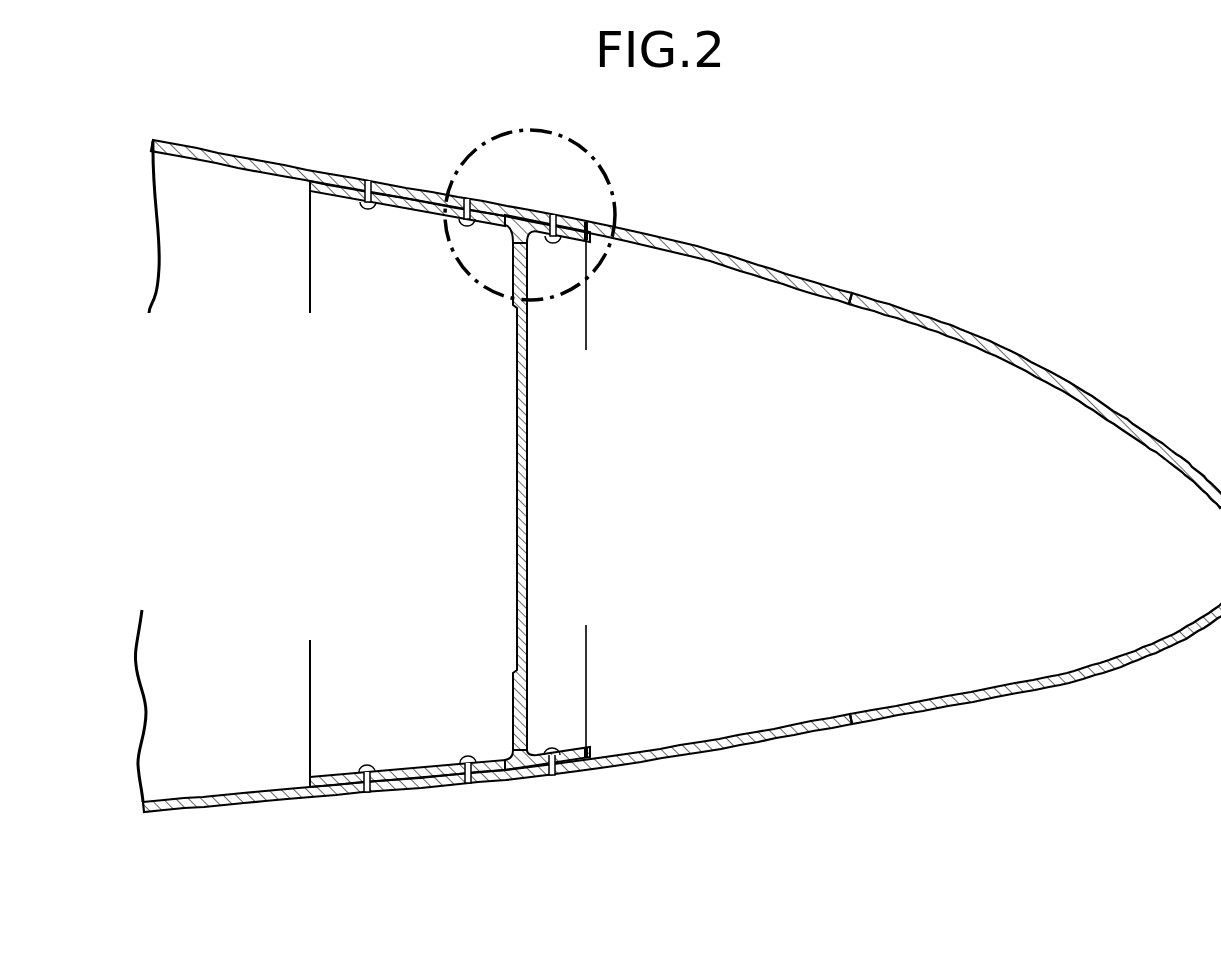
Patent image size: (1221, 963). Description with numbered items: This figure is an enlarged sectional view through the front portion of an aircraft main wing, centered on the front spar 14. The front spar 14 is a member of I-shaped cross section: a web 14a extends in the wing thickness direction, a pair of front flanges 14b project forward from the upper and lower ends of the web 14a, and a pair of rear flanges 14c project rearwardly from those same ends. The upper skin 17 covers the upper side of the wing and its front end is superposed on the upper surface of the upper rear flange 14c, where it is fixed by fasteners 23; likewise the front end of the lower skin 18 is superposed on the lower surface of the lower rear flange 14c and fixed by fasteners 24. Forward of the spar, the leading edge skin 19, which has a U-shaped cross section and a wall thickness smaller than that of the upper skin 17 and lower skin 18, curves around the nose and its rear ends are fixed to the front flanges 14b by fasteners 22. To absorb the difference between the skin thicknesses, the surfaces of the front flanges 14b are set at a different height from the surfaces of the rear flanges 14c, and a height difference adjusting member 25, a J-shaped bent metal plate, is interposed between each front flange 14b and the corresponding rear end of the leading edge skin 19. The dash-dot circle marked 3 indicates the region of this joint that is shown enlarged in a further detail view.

The detail view area 3 is at (630, 206).
The front spar 14 is at (542, 479).
The web 14a is at (514, 458).
The front flange 14b is at (579, 232).
The rear flange 14c is at (401, 205).
The upper skin 17 is at (229, 153).
The lower skin 18 is at (231, 812).
The leading edge skin 19 is at (928, 318).
The fastener 22 is at (555, 215).
The fastener 23 is at (368, 181).
The fastener 24 is at (366, 790).
The height difference adjusting member 25 is at (579, 240).